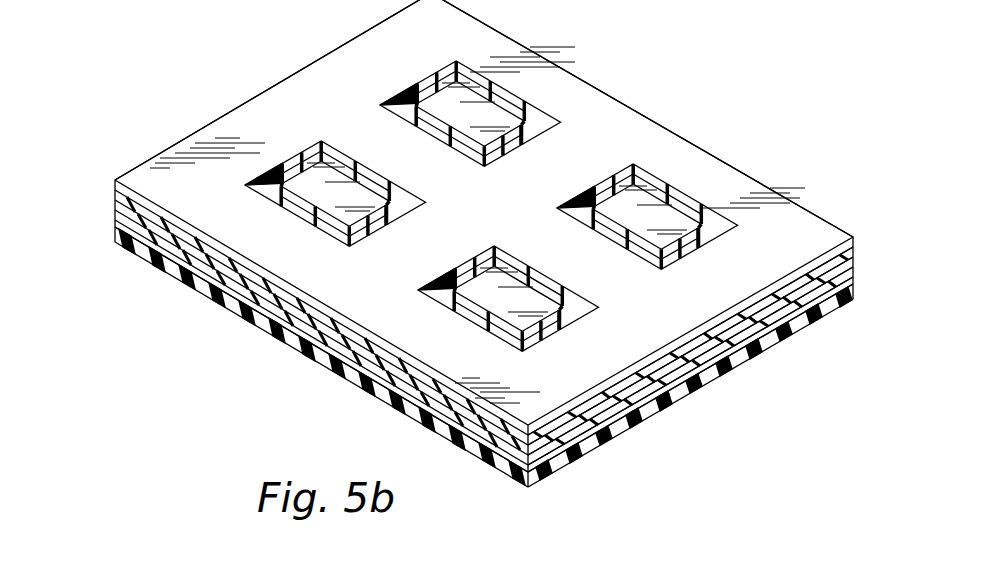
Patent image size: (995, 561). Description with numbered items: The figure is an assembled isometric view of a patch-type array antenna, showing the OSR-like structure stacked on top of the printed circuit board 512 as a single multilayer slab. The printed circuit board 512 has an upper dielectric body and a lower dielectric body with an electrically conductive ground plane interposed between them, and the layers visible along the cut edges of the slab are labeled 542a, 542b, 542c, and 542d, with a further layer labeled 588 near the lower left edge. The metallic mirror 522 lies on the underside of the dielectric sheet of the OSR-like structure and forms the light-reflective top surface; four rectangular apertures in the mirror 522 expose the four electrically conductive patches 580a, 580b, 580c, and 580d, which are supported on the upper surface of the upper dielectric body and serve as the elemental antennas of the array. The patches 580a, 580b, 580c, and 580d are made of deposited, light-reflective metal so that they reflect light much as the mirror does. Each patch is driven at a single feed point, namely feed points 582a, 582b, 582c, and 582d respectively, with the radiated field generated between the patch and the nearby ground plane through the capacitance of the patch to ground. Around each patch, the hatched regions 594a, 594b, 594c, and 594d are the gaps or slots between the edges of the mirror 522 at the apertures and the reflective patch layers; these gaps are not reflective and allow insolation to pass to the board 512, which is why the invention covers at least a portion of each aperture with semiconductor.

The printed circuit board 512 is at (112, 220).
The metallic mirror 522 is at (147, 158).
The intermediate layer 588 is at (113, 230).
The electrically conductive patch 580a is at (590, 298).
The electrically conductive patch 580b is at (722, 232).
The electrically conductive patch 580c is at (422, 202).
The electrically conductive patch 580d is at (545, 122).
The feed point 582a is at (452, 300).
The feed point 582b is at (602, 198).
The feed point 582c is at (302, 168).
The feed point 582d is at (433, 88).
The hatched region 594a is at (565, 325).
The hatched region 594b is at (705, 228).
The hatched region 594c is at (368, 230).
The hatched region 594d is at (518, 147).
The layer 542a is at (665, 395).
The layer 542b is at (757, 354).
The layer 542c is at (703, 362).
The layer 542d is at (727, 352).